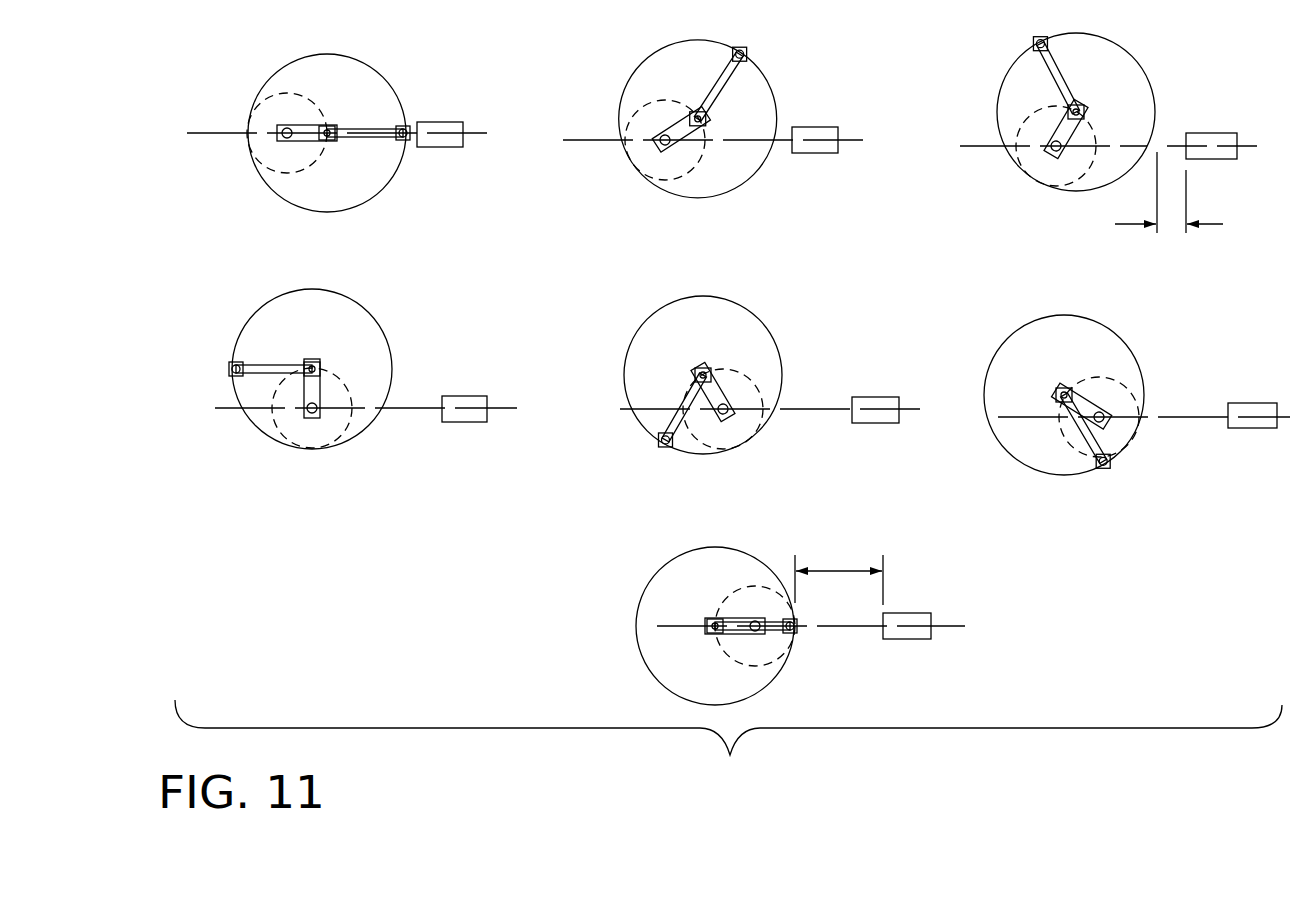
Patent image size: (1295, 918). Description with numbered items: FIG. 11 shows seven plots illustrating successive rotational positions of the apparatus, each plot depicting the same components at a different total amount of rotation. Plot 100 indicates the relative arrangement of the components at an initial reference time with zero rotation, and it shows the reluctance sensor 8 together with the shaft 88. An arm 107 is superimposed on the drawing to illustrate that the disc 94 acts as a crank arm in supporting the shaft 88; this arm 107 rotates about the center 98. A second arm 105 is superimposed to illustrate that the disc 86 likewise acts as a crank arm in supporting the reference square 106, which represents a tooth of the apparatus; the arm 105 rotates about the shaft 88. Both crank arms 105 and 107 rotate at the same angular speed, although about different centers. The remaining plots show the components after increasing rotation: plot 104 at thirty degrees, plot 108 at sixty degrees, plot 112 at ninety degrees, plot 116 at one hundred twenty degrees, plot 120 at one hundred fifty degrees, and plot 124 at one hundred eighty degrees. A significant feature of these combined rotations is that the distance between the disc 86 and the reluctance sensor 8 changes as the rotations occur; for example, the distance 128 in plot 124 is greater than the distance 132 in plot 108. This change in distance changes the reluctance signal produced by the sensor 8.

The reluctance sensor 8 is at (445, 122).
The disc 86 is at (374, 69).
The shaft 88 is at (337, 150).
The disc 94 is at (272, 93).
The center 98 is at (283, 143).
The plot 100 is at (348, 148).
The plot 104 is at (748, 200).
The second arm 105 is at (372, 140).
The reference square 106 is at (408, 141).
The arm 107 is at (276, 111).
The plot 108 is at (1095, 147).
The plot 112 is at (358, 446).
The plot 116 is at (759, 454).
The plot 120 is at (1128, 479).
The plot 124 is at (742, 613).
The distance 128 is at (837, 570).
The distance 132 is at (1210, 226).